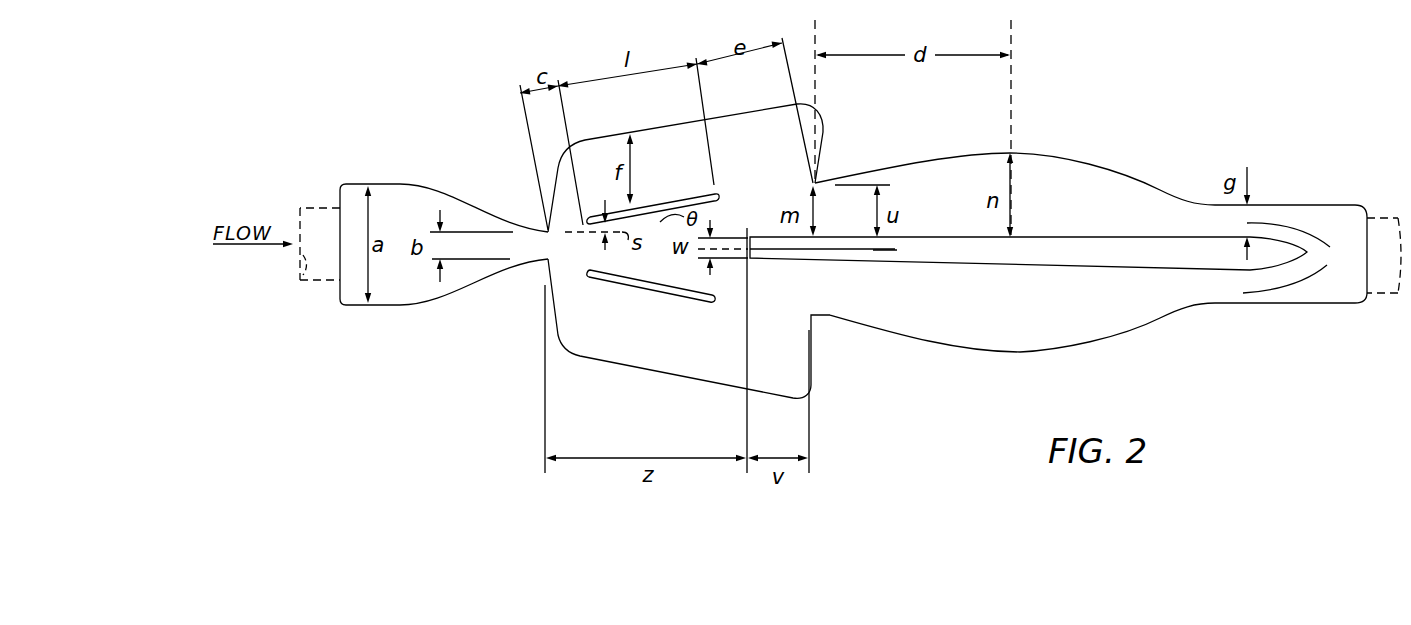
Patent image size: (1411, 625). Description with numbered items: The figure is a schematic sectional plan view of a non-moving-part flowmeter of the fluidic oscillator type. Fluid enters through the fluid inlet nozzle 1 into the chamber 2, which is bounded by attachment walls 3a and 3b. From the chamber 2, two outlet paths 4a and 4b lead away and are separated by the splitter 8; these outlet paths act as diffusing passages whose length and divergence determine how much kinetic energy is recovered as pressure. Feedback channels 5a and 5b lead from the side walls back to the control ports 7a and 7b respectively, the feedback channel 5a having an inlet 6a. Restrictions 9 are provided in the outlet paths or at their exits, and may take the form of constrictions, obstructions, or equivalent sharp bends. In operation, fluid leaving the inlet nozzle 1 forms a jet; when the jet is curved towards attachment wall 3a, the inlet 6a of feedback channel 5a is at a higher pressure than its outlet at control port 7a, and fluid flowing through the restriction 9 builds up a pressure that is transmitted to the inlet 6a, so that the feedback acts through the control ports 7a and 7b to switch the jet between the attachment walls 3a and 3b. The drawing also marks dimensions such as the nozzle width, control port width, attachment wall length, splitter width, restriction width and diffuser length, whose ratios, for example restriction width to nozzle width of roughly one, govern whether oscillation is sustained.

The fluid inlet nozzle 1 is at (546, 246).
The chamber 2 is at (637, 260).
The attachment wall 3a is at (667, 217).
The attachment wall 3b is at (673, 282).
The outlet path 4a is at (927, 203).
The outlet path 4b is at (974, 322).
The feedback channel 5a is at (690, 167).
The feedback channel 5b is at (713, 353).
The inlet of feedback channel 6a is at (762, 190).
The control port 7a is at (567, 221).
The control port 7b is at (573, 270).
The splitter 8 is at (818, 244).
The restriction 9 is at (1295, 258).